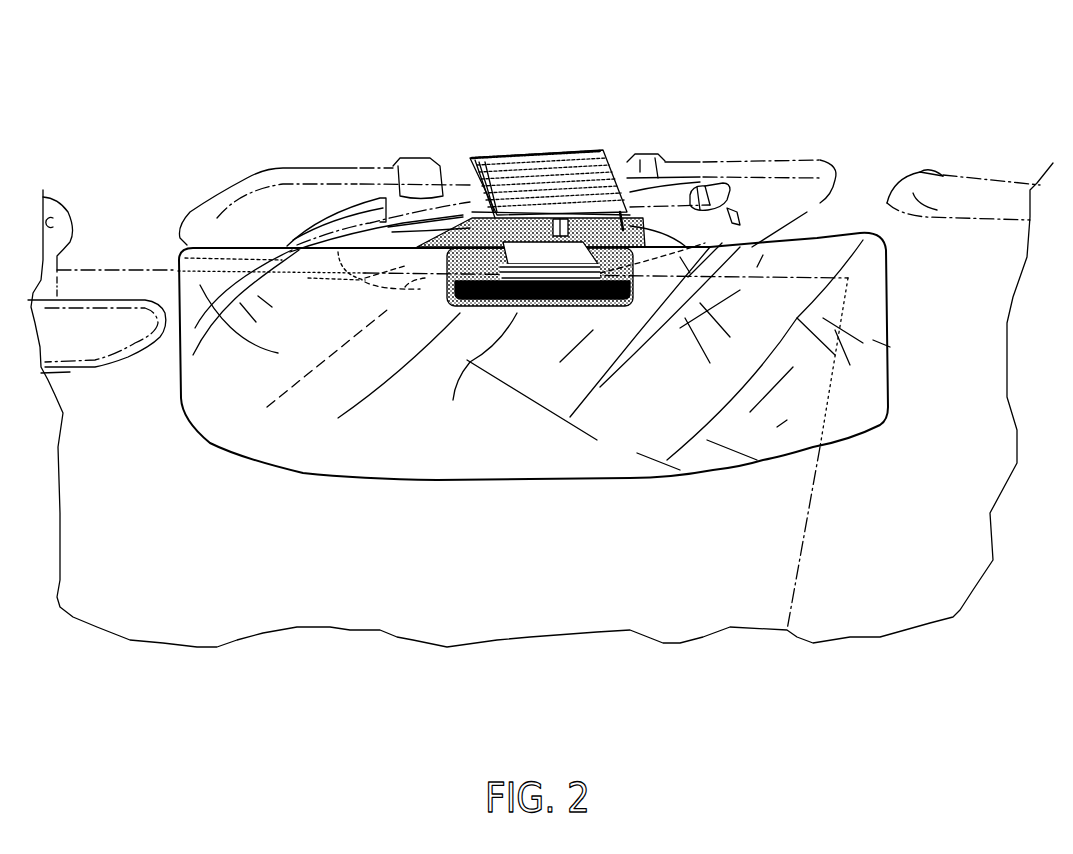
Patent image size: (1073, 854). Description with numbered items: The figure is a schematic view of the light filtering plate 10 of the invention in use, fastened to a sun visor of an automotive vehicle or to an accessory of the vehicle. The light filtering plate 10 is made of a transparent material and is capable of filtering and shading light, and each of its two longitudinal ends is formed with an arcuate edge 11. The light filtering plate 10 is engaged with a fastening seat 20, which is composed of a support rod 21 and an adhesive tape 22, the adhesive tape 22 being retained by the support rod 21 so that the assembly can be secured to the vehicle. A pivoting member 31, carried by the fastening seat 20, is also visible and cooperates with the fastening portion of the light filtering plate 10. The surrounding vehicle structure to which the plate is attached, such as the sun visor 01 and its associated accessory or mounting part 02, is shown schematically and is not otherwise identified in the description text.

The mounting rail 01 is at (777, 172).
The clamp 02 is at (658, 195).
The windshield body 10 is at (718, 460).
The parting line 11 is at (848, 275).
The housing 20 is at (436, 235).
The cover 21 is at (490, 200).
The display module 22 is at (552, 160).
The receiving slot 31 is at (548, 255).